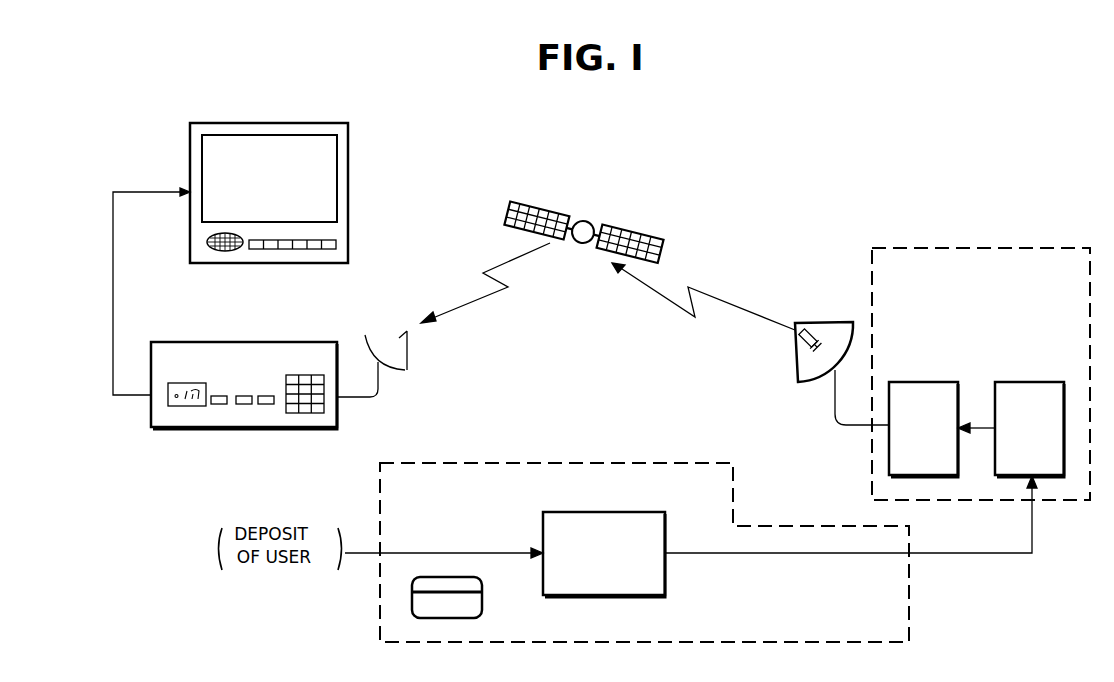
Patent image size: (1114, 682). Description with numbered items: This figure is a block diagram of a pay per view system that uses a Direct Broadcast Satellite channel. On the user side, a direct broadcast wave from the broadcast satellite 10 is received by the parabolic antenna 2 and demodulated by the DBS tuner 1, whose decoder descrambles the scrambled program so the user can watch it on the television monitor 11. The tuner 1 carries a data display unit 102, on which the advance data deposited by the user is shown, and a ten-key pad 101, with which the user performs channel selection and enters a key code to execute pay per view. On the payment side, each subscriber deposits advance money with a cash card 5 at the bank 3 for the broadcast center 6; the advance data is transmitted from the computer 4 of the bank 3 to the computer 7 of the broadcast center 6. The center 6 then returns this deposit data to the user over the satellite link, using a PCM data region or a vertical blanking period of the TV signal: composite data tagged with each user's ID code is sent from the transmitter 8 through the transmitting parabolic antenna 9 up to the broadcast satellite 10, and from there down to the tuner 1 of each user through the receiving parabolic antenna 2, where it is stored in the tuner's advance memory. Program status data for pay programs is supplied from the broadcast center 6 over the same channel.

The DBS tuner 1 is at (152, 410).
The parabolic antenna 2 is at (372, 345).
The bank 3 is at (691, 463).
The computer 4 is at (665, 590).
The cash card 5 is at (412, 612).
The broadcast center 6 is at (948, 247).
The computer 7 is at (1025, 382).
The transmitter 8 is at (889, 470).
The transmitting parabolic antenna 9 is at (795, 373).
The broadcast satellite 10 is at (642, 232).
The television monitor 11 is at (348, 186).
The ten-key pad 101 is at (303, 413).
The data display unit 102 is at (180, 407).